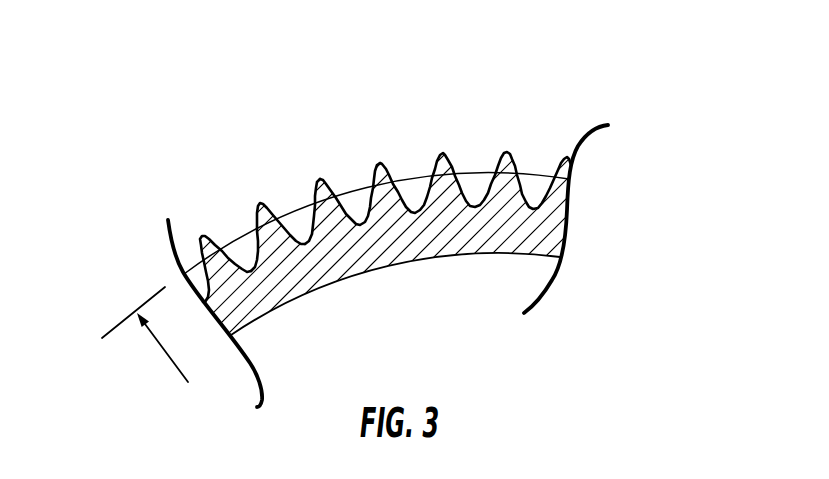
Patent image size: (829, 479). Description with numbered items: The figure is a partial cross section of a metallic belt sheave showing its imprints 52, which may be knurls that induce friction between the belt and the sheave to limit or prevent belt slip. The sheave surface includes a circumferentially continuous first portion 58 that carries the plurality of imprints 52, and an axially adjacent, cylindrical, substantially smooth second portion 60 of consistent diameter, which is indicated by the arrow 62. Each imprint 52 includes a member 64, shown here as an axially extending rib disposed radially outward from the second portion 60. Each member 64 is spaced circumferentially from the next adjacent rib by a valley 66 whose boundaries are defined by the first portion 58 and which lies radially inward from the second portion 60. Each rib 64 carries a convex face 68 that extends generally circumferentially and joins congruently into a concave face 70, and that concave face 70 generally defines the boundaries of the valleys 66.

The imprints 52 is at (484, 126).
The first portion 58 is at (198, 238).
The second portion 60 is at (237, 238).
The arrow 62 is at (175, 362).
The member 64 is at (316, 181).
The valley 66 is at (358, 207).
The convex face 68 is at (257, 207).
The concave face 70 is at (262, 255).